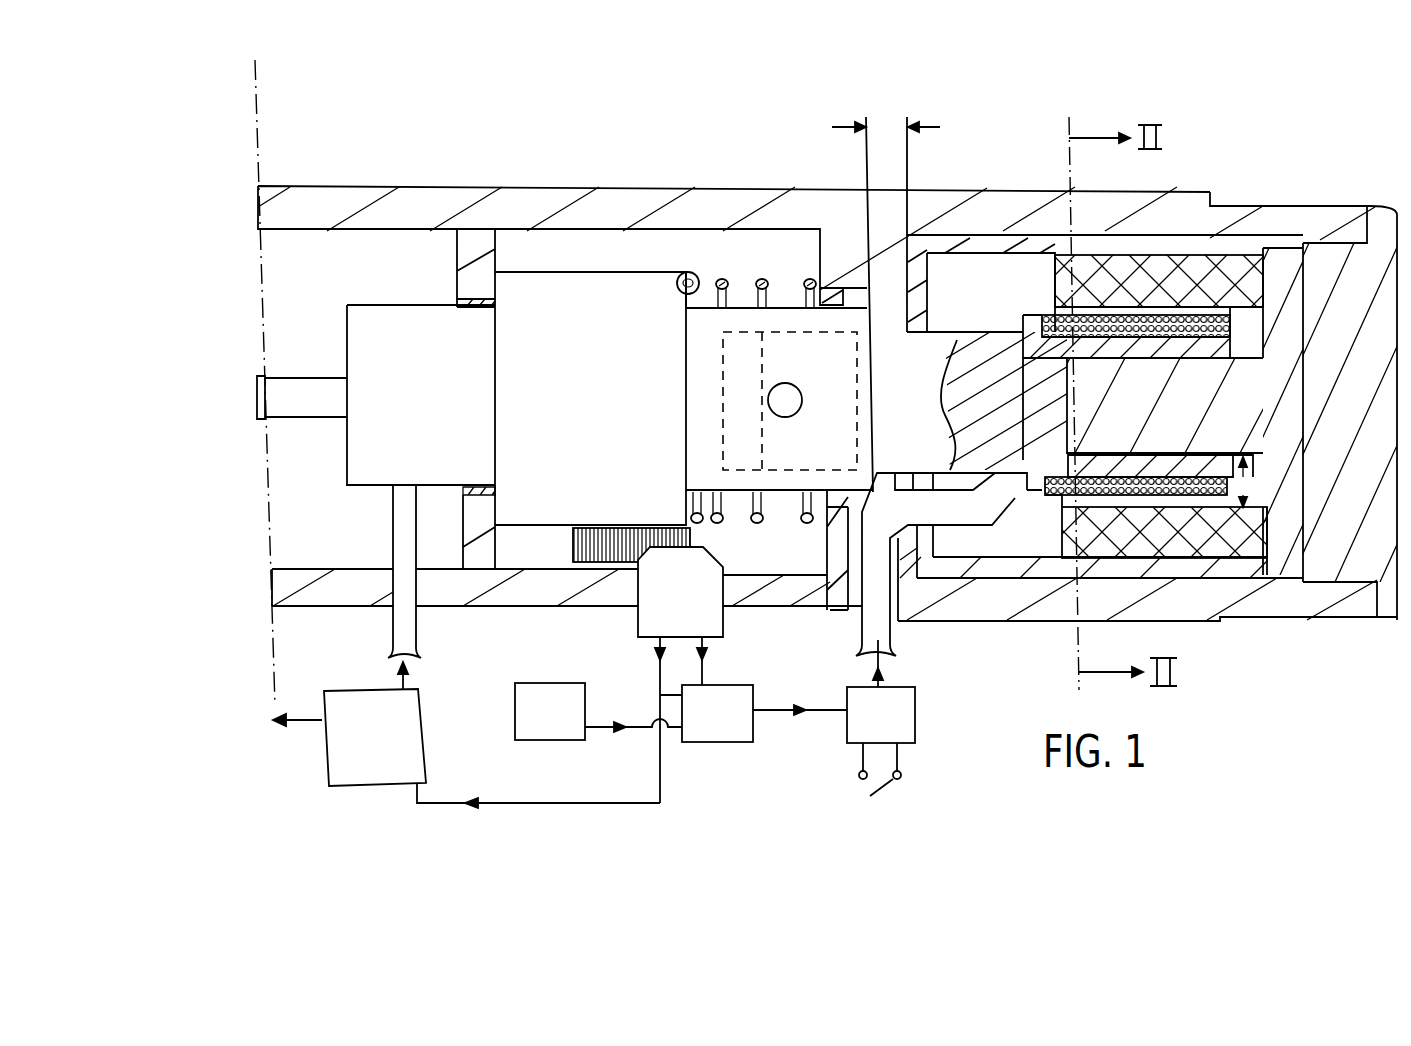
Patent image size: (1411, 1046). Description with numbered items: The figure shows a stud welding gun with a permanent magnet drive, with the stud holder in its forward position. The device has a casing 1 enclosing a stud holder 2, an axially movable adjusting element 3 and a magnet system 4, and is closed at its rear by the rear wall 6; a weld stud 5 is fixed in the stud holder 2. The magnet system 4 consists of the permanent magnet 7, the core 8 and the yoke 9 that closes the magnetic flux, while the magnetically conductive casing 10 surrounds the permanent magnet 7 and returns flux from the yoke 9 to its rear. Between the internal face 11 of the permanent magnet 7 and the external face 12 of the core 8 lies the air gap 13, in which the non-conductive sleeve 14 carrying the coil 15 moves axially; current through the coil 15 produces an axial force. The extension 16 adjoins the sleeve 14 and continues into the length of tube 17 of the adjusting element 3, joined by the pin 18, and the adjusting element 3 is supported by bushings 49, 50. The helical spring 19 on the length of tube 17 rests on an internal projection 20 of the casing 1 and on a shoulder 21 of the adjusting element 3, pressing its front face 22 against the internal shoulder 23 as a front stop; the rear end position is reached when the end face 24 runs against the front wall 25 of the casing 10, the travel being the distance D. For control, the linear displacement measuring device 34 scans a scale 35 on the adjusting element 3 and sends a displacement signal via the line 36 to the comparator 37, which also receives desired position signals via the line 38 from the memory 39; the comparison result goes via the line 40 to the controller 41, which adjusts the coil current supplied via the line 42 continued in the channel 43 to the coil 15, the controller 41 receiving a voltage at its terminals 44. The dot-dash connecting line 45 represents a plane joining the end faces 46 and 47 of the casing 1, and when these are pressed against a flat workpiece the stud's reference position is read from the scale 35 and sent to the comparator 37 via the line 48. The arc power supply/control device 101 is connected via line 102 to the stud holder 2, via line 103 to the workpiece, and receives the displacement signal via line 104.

The casing 1 is at (588, 187).
The stud holder 2 is at (360, 362).
The adjusting element 3 is at (573, 283).
The magnet system 4 is at (1040, 280).
The weld stud 5 is at (305, 398).
The rear wall 6 is at (1373, 258).
The permanent magnet 7 is at (1220, 305).
The core 8 is at (1050, 440).
The yoke 9 is at (1292, 547).
The casing 10 is at (1163, 247).
The internal face 11 is at (1263, 278).
The external face 12 is at (1240, 495).
The air gap 13 is at (1213, 493).
The sleeve 14 is at (1053, 350).
The coil 15 is at (1122, 315).
The extension 16 is at (952, 377).
The length of tube 17 is at (740, 318).
The pin 18 is at (785, 383).
The helical spring 19 is at (720, 280).
The internal projection 20 is at (817, 272).
The shoulder 21 is at (677, 288).
The front face 22 is at (490, 340).
The internal shoulder 23 is at (493, 248).
The end face 24 is at (873, 320).
The front wall 25 is at (905, 307).
The linear displacement measuring device 34 is at (650, 603).
The scale 35 is at (567, 545).
The line 36 is at (657, 690).
The comparator 37 is at (723, 718).
The line 38 is at (598, 733).
The memory 39 is at (543, 725).
The line 40 is at (775, 712).
The controller 41 is at (897, 708).
The line 42 is at (878, 653).
The channel 43 is at (862, 641).
The terminals 44 is at (880, 781).
The dot-dash connecting line 45 is at (263, 114).
The end face 46 is at (257, 207).
The end face 47 is at (272, 592).
The line 48 is at (705, 672).
The bushing 49 is at (497, 307).
The bushing 50 is at (848, 292).
The arc power supply/control device 101 is at (340, 787).
The line 102 is at (406, 664).
The line 103 is at (292, 725).
The line 104 is at (445, 797).